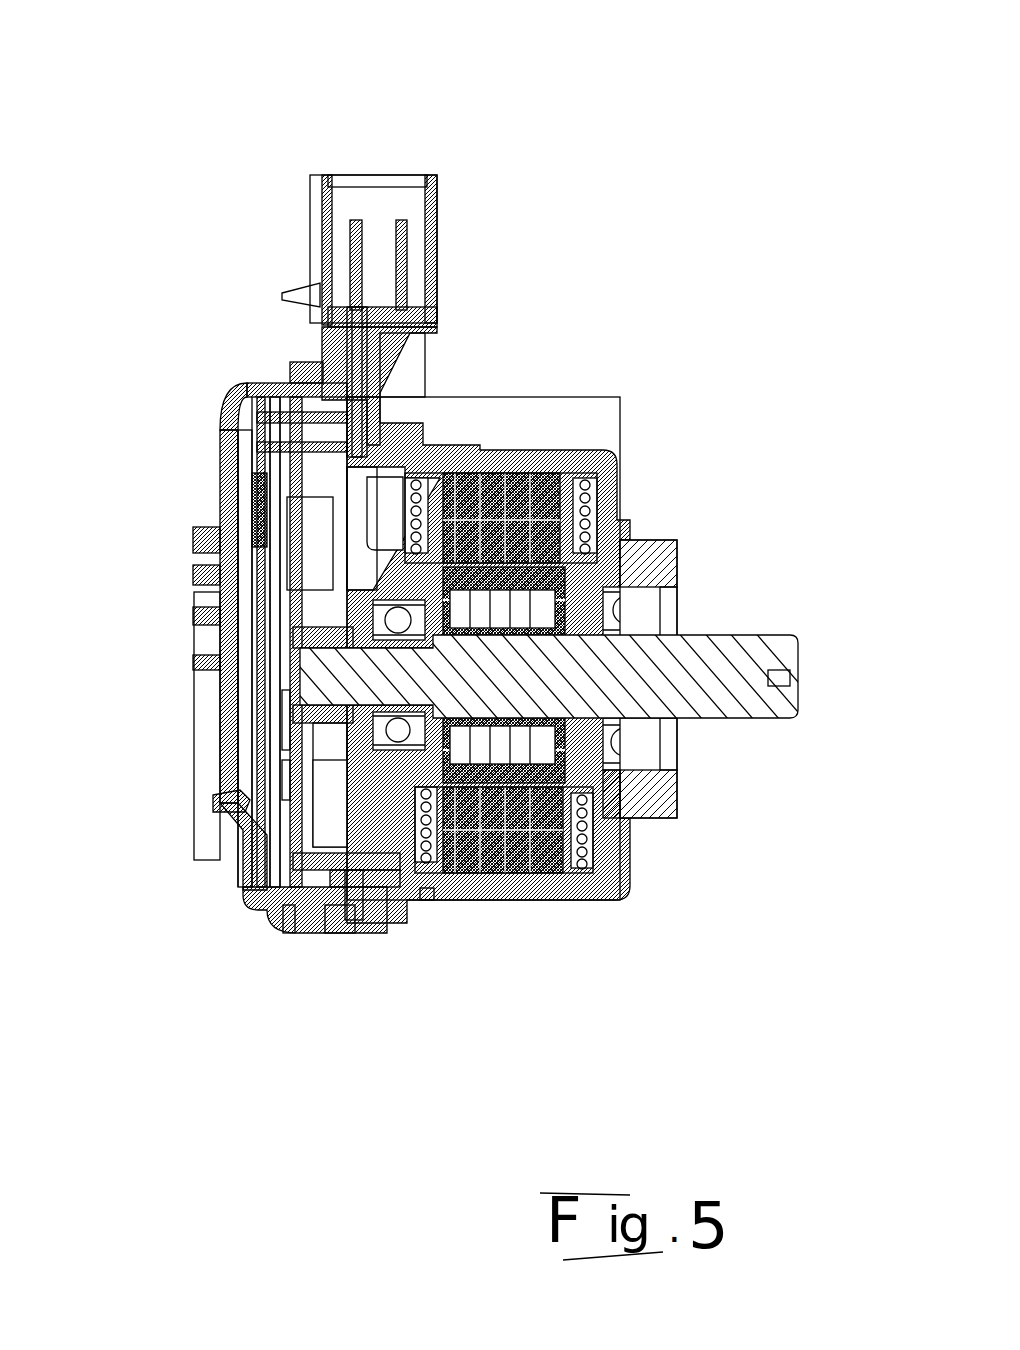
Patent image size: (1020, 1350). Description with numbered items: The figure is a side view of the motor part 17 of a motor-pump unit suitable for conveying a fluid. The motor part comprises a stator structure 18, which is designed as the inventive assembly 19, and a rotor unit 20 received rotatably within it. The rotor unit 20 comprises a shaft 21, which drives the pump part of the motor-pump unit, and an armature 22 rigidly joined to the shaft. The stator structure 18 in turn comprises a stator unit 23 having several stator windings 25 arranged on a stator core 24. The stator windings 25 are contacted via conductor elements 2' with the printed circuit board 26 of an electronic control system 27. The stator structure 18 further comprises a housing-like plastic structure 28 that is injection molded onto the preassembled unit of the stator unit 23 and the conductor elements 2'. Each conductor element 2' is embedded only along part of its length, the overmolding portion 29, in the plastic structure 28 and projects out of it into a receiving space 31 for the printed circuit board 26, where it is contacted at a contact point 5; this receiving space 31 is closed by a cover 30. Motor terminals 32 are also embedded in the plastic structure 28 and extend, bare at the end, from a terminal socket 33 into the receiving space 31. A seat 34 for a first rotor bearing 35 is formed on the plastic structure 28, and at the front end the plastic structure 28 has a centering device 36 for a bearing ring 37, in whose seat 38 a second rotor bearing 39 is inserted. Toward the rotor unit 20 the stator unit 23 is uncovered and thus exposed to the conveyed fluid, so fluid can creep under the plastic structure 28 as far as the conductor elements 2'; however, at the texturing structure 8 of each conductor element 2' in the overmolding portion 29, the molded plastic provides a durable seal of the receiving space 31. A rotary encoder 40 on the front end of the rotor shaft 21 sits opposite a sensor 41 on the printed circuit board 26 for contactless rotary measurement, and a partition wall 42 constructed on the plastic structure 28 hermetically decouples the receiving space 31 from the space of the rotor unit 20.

The motor part 17 is at (486, 248).
The stator structure 18 is at (497, 450).
The assembly 19 is at (500, 674).
The rotor unit 20 is at (645, 545).
The shaft 21 is at (750, 644).
The armature 22 is at (510, 805).
The stator unit 23 is at (575, 470).
The stator core 24 is at (558, 402).
The stator windings 25 is at (620, 530).
The printed circuit board 26 is at (270, 580).
The electronic control system 27 is at (226, 807).
The plastic structure 28 is at (480, 895).
The overmolding portion 29 is at (337, 937).
The cover 30 is at (228, 728).
The receiving space 31 is at (298, 771).
The motor terminals 32 is at (322, 330).
The terminal socket 33 is at (296, 196).
The seat 34 is at (425, 445).
The first rotor bearing 35 is at (397, 930).
The centering device 36 is at (605, 830).
The bearing ring 37 is at (677, 557).
The seat 38 is at (643, 577).
The second rotor bearing 39 is at (643, 813).
The rotary encoder 40 is at (292, 690).
The sensor 41 is at (265, 665).
The partition wall 42 is at (246, 738).
The contact point 5 is at (283, 930).
The texturing structure 8 is at (355, 935).
The conductor element 2' is at (365, 1050).